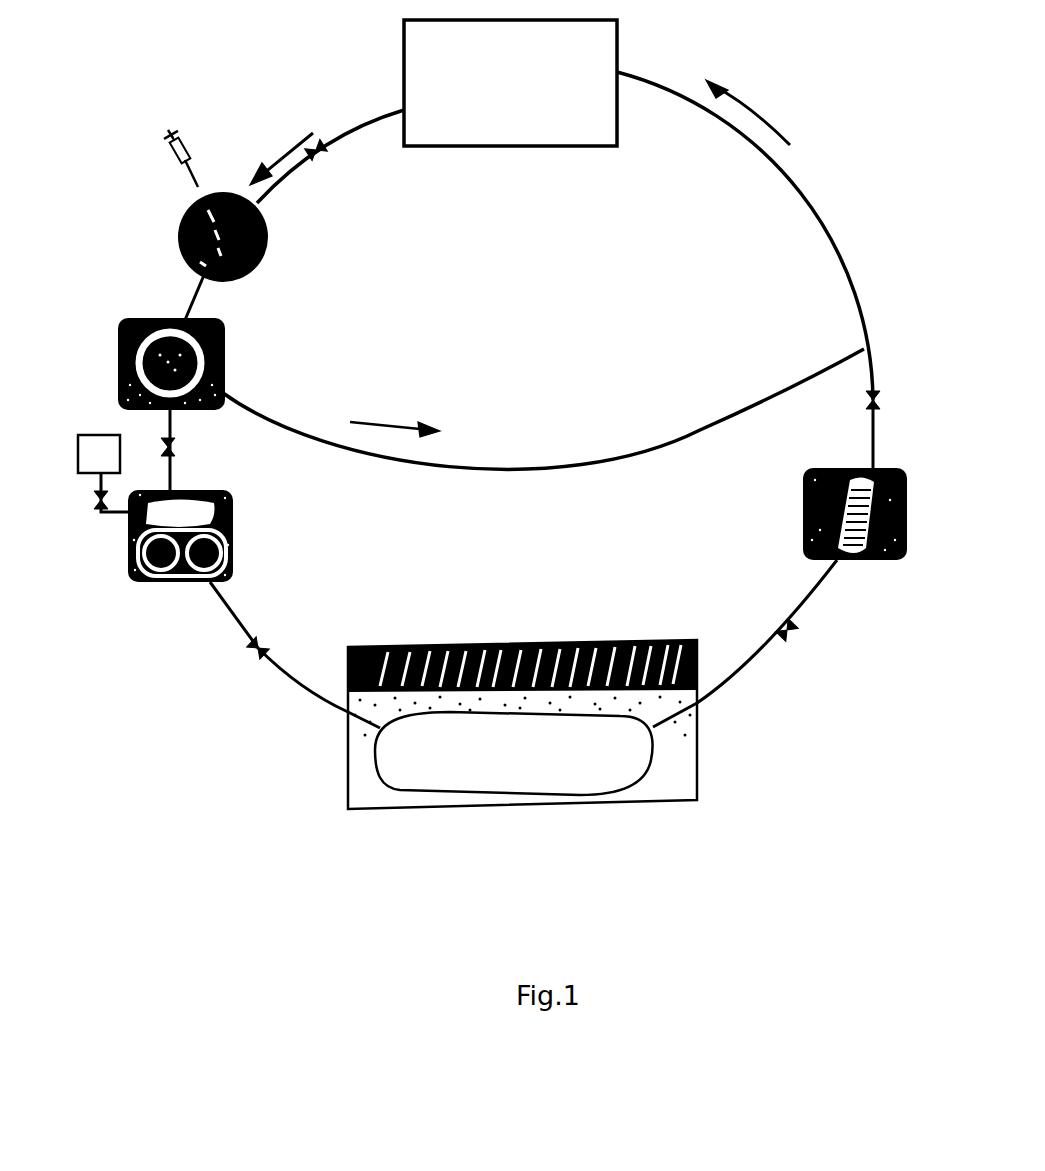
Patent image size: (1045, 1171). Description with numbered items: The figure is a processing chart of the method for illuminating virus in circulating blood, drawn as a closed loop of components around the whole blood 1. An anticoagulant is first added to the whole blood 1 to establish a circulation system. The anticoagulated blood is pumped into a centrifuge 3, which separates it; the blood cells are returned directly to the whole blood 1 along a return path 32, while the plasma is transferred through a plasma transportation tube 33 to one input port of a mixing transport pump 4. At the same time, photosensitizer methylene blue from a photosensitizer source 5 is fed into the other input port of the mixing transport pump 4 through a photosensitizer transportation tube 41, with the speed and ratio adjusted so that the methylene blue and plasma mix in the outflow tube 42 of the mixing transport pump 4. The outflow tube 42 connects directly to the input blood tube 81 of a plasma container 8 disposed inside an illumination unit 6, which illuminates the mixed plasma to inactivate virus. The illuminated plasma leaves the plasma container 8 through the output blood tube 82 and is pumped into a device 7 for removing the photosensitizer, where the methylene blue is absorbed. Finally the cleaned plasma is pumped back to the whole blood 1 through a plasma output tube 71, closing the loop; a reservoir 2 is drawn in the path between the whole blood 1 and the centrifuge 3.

The whole blood 1 is at (510, 83).
The sample reservoir 2 is at (266, 250).
The centrifuge 3 is at (224, 365).
The plasma transportation tube 33 is at (172, 418).
The return line 32 is at (543, 409).
The photosensitizer source 5 is at (99, 454).
The photosensitizer transportation tube 41 is at (113, 514).
The mixing transport pump 4 is at (233, 530).
The outflow tube 42 is at (223, 610).
The input blood tube 81 is at (312, 688).
The illumination unit 6 is at (542, 645).
The plasma container 8 is at (512, 773).
The device for removing off the photosensitizer 7 is at (803, 530).
The plasma output tube 71 is at (873, 445).
The output blood tube 82 is at (745, 677).